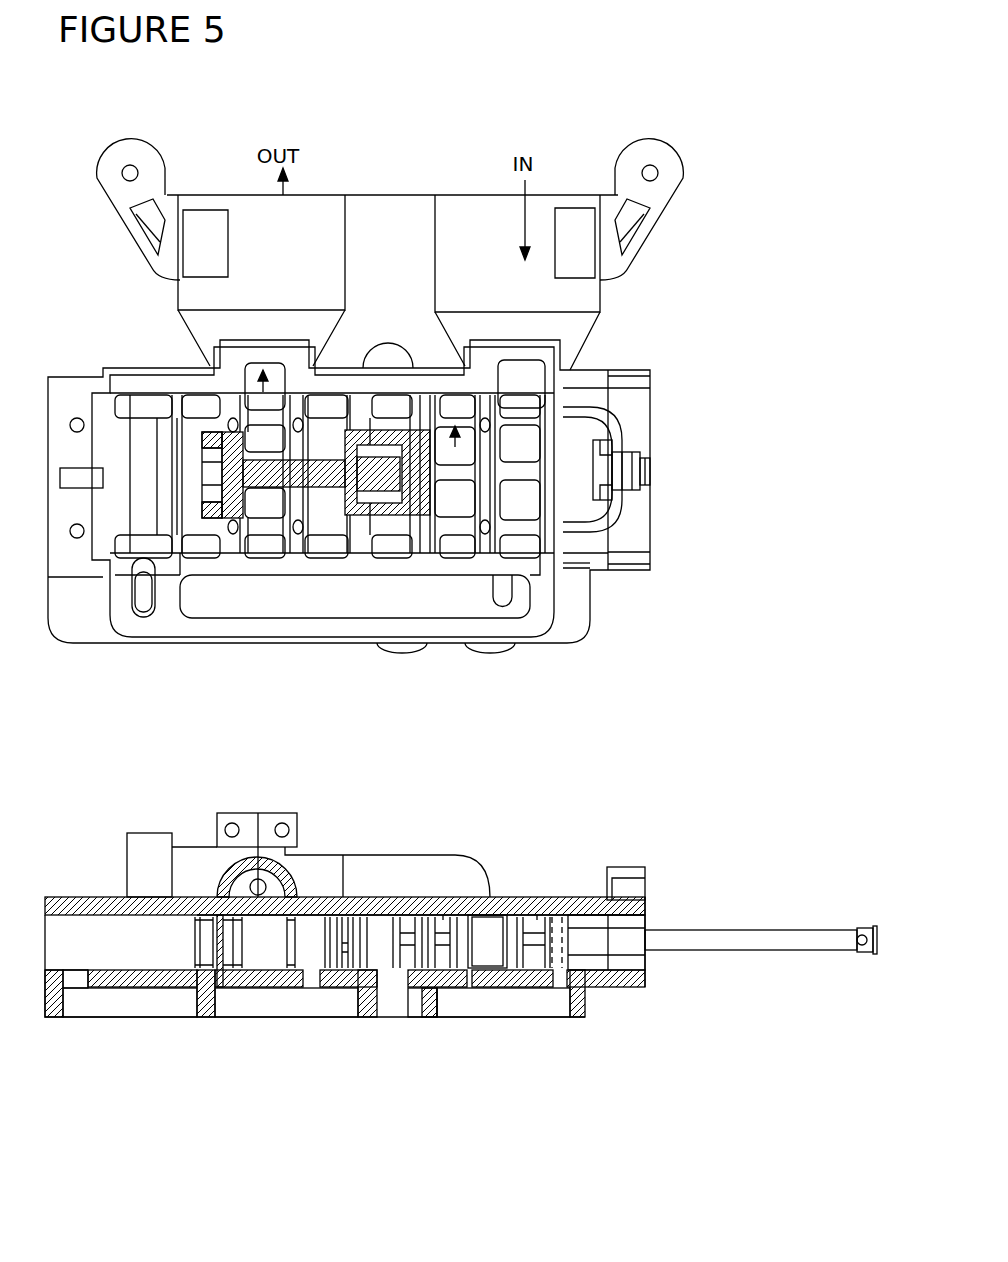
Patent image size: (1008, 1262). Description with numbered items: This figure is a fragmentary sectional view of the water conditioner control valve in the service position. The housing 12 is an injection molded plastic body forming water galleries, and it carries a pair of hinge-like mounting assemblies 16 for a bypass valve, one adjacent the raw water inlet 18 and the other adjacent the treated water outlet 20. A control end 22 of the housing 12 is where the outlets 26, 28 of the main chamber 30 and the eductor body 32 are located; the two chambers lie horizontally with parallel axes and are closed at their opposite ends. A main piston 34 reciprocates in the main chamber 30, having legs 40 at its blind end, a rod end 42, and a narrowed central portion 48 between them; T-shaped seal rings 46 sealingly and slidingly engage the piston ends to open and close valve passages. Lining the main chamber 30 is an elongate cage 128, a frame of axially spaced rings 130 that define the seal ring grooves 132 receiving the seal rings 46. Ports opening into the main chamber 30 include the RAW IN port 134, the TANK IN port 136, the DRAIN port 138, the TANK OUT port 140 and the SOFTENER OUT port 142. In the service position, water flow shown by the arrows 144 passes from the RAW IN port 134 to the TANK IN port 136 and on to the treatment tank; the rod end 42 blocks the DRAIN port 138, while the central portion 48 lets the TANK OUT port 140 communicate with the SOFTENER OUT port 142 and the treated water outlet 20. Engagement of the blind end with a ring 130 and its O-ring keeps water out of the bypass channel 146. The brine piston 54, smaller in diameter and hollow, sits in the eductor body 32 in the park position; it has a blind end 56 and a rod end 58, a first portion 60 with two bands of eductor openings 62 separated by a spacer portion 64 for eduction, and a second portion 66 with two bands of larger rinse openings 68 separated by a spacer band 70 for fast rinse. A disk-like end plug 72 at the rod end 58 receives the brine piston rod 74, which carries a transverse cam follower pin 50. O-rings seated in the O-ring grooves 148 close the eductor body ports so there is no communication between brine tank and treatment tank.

The housing 12 is at (592, 378).
The hinge-like mounting assemblies 16 is at (118, 157).
The raw water inlet 18 is at (483, 195).
The treated water outlet 20 is at (312, 208).
The control end 22 is at (652, 567).
The outlet 26 is at (638, 510).
The outlet 28 is at (647, 915).
The main chamber 30 is at (572, 437).
The eductor body 32 is at (80, 970).
The main piston 34 is at (233, 447).
The legs 40 is at (182, 507).
The rod end 42 is at (412, 395).
The seal rings 46 is at (420, 533).
The central portion 48 is at (262, 525).
The transverse pin 50 is at (863, 953).
The brine piston 54 is at (263, 953).
The blind end 56 is at (190, 947).
The rod end 58 is at (603, 983).
The first portion 60 is at (377, 963).
The eductor openings 62 is at (347, 960).
The spacer portion 64 is at (380, 925).
The second portion 66 is at (495, 922).
The rinse openings 68 is at (443, 920).
The spacer band 70 is at (485, 945).
The end plug 72 is at (560, 915).
The brine piston rod 74 is at (790, 940).
The cage 128 is at (460, 530).
The rings 130 is at (230, 563).
The seal ring grooves 132 is at (352, 400).
The RAW IN port 134 is at (523, 375).
The TANK IN port 136 is at (440, 400).
The DRAIN port 138 is at (388, 383).
The TANK OUT port 140 is at (328, 400).
The SOFTENER OUT port 142 is at (280, 380).
The arrows 144 is at (650, 467).
The bypass channel 146 is at (224, 607).
The O-ring grooves 148 is at (200, 897).